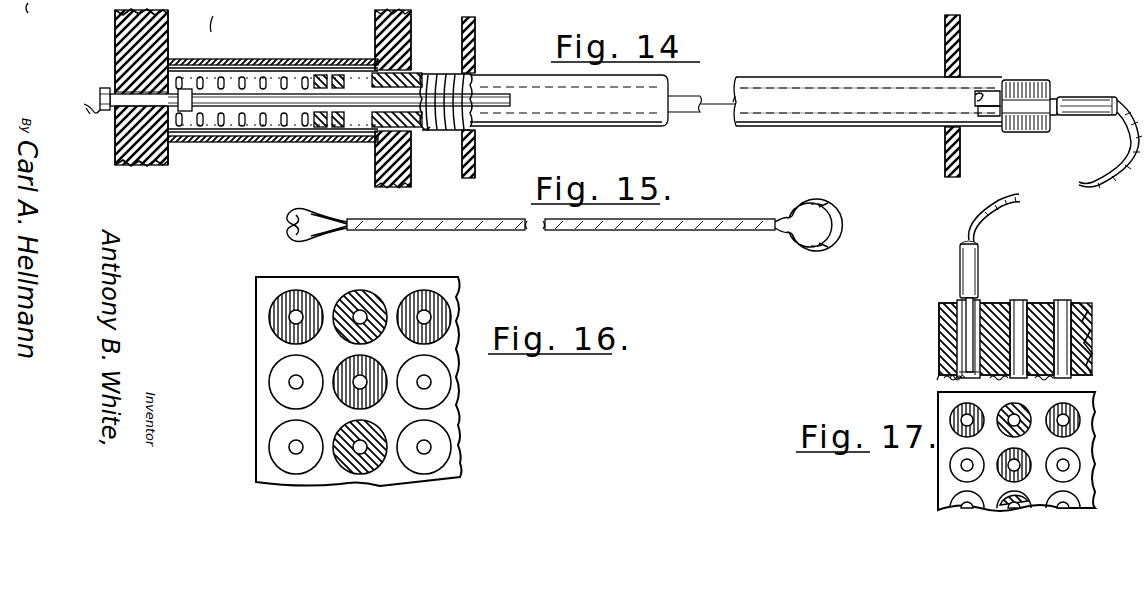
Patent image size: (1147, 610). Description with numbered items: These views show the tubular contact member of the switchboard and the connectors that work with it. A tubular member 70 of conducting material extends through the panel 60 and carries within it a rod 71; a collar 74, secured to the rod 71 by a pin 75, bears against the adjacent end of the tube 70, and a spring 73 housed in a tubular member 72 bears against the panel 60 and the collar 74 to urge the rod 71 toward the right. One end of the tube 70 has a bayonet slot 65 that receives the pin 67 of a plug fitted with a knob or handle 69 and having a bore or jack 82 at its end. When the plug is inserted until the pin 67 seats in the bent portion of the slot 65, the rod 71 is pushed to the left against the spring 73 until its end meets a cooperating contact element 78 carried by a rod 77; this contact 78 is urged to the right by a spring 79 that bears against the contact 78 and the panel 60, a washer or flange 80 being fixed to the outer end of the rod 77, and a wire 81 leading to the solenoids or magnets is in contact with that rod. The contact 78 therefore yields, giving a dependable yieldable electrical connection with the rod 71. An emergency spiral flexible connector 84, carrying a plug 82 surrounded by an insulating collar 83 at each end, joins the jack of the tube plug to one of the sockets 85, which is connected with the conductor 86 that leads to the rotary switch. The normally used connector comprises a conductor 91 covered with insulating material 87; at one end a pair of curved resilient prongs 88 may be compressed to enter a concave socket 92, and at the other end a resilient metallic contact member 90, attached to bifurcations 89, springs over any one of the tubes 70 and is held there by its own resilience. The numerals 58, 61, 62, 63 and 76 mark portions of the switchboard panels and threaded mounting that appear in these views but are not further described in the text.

In FIG. 17, the socket block 58 is at (939, 327).
In FIG. 14, the panel 60 is at (120, 20).
In FIG. 14, the partition wall 61 is at (415, 28).
In FIG. 14, the partition wall 62 is at (475, 54).
In FIG. 14, the contact panel 63 is at (945, 42).
In FIG. 16, the contact panel 63 is at (258, 432).
In FIG. 14, the bayonet slot 65 is at (982, 116).
In FIG. 14, the pin 67 is at (978, 92).
In FIG. 14, the knob or handle 69 is at (1030, 80).
In FIG. 14, the tubular member 70 is at (593, 120).
In FIG. 16, the tubular member 70 is at (272, 380).
In FIG. 14, the rod 71 is at (248, 80).
In FIG. 14, the tubular member 72 is at (266, 142).
In FIG. 14, the spring 73 is at (284, 72).
In FIG. 14, the collar 74 is at (326, 75).
In FIG. 14, the pin 75 is at (330, 127).
In FIG. 14, the threaded portion 76 is at (436, 74).
In FIG. 14, the rod 77 is at (108, 114).
In FIG. 14, the contact element 78 is at (186, 120).
In FIG. 14, the spring 79 is at (185, 88).
In FIG. 14, the washer or flange 80 is at (104, 88).
In FIG. 14, the wire 81 is at (84, 104).
In FIG. 14, the plug 82 is at (1060, 96).
In FIG. 17, the plug 82 is at (952, 300).
In FIG. 14, the insulating collar 83 is at (1098, 112).
In FIG. 17, the insulating collar 83 is at (976, 262).
In FIG. 14, the flexible connector 84 is at (1106, 188).
In FIG. 17, the socket 85 is at (1062, 302).
In FIG. 17, the wire 86 is at (931, 376).
In FIG. 15, the insulating material 87 is at (456, 218).
In FIG. 15, the curved resilient prongs 88 is at (282, 238).
In FIG. 15, the bifurcations 89 is at (780, 220).
In FIG. 15, the resilient metallic contact member 90 is at (820, 204).
In FIG. 14, the conductor 91 is at (222, 16).
In FIG. 15, the conductor 91 is at (544, 232).
In FIG. 14, the concave socket 92 is at (27, 20).